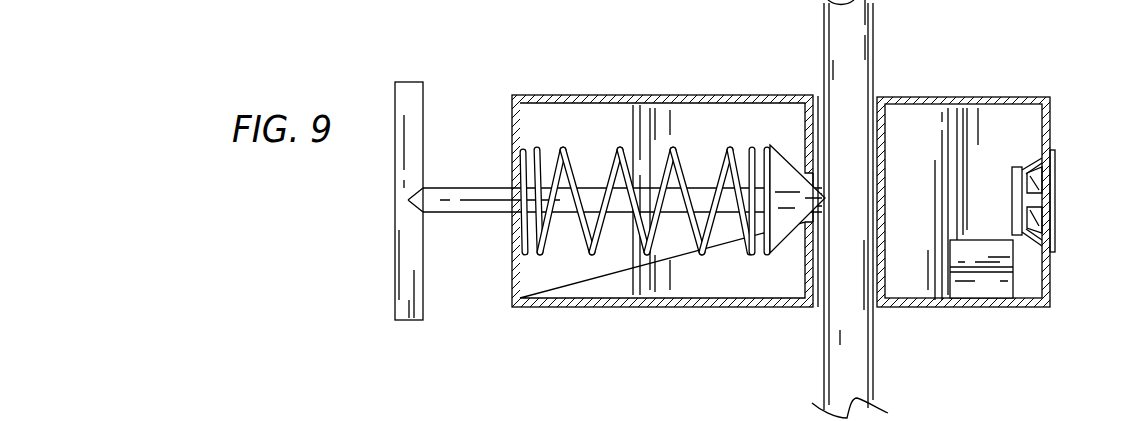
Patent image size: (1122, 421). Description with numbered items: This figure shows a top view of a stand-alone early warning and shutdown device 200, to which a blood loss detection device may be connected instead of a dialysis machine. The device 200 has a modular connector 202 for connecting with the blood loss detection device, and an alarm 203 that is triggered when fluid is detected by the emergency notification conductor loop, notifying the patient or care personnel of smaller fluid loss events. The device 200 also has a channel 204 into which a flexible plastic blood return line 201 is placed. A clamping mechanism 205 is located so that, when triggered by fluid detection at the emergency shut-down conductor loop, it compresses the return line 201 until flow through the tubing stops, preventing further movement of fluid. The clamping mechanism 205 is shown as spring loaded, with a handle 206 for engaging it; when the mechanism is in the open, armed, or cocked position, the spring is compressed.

The early warning and shutdown device 200 is at (346, 219).
The blood return line 201 is at (842, 353).
The modular connector 202 is at (992, 290).
The alarm 203 is at (1033, 167).
The channel 204 is at (820, 110).
The clamping mechanism 205 is at (697, 198).
The handle 206 is at (400, 273).